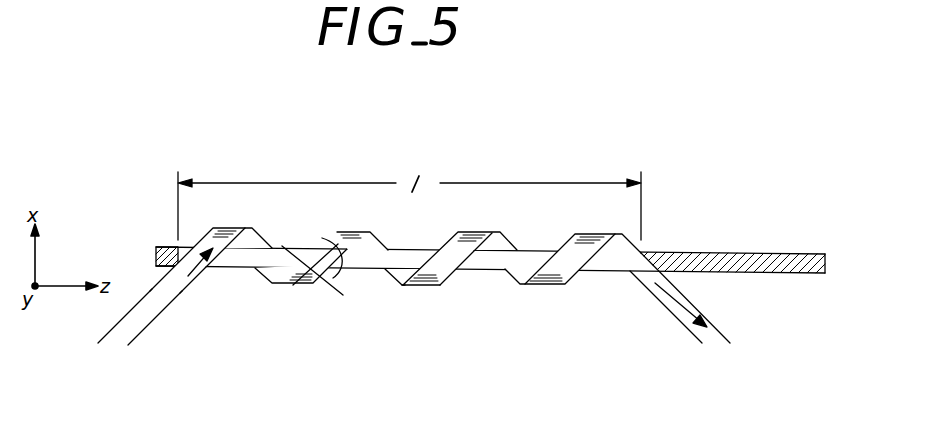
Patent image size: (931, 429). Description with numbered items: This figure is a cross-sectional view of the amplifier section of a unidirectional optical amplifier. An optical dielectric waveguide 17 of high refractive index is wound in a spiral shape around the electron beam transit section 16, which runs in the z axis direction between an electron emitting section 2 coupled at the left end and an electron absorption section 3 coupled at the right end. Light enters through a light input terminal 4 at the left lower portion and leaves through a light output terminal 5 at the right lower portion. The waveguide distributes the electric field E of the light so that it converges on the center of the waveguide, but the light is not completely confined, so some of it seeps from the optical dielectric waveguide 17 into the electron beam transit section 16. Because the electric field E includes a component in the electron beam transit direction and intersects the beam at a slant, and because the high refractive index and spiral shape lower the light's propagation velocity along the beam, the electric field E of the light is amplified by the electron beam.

The electron emitting section 2 is at (158, 244).
The electron absorption section 3 is at (734, 253).
The light input terminal 4 is at (118, 338).
The light output terminal 5 is at (717, 338).
The electron beam transit section 16 is at (495, 262).
The optical dielectric waveguide 17 is at (427, 271).
The electric field of light E is at (282, 246).